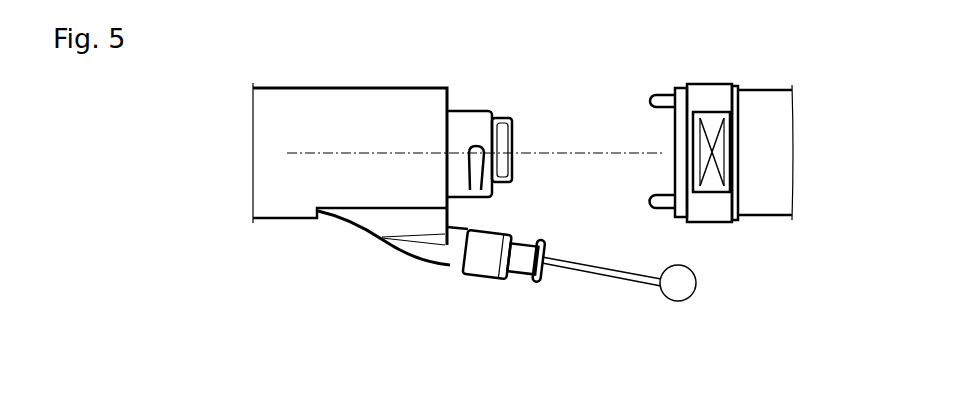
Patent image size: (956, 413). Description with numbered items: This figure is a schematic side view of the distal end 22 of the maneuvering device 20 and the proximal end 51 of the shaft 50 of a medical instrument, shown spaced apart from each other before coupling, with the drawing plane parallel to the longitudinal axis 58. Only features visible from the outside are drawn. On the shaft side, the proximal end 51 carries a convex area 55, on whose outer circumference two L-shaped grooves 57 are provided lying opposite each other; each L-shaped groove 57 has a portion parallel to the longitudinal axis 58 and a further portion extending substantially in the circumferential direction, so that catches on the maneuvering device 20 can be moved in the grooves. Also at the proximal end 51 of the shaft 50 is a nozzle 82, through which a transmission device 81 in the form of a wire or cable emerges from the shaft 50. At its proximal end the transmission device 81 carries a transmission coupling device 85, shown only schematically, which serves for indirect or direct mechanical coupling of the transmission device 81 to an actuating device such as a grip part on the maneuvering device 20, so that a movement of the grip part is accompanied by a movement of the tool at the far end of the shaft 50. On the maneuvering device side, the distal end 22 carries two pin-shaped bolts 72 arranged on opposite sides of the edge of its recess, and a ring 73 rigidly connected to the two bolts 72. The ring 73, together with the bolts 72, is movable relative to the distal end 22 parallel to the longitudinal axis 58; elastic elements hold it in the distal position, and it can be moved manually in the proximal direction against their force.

The maneuvering device 20 is at (705, 165).
The distal end 22 is at (705, 165).
The shaft 50 is at (500, 187).
The proximal end 51 is at (500, 187).
The convex area 55 is at (473, 112).
The L-shaped groove 57 is at (480, 192).
The longitudinal axis 58 is at (579, 150).
The bolt 72 is at (658, 207).
The ring 73 is at (712, 220).
The transmission device 81 is at (607, 277).
The nozzle 82 is at (525, 270).
The transmission coupling device 85 is at (687, 296).